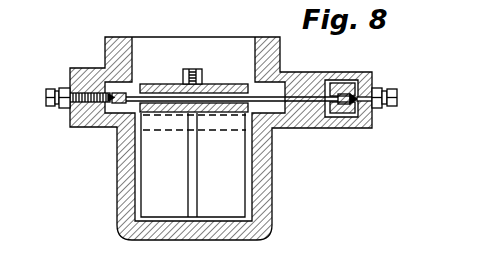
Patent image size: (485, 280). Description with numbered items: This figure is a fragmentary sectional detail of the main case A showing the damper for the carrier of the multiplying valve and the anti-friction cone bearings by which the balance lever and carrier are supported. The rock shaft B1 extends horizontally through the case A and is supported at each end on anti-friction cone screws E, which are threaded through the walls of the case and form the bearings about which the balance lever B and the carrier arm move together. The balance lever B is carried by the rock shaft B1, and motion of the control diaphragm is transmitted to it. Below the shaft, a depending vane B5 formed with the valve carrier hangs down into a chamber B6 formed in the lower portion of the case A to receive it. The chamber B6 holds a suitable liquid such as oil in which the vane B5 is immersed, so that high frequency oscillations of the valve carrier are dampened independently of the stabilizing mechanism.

The main case A is at (264, 160).
The balance lever B is at (344, 118).
The rock shaft B1 is at (293, 97).
The depending vane B5 is at (158, 181).
The chamber B6 is at (245, 211).
The anti-friction cone screws E is at (58, 88).